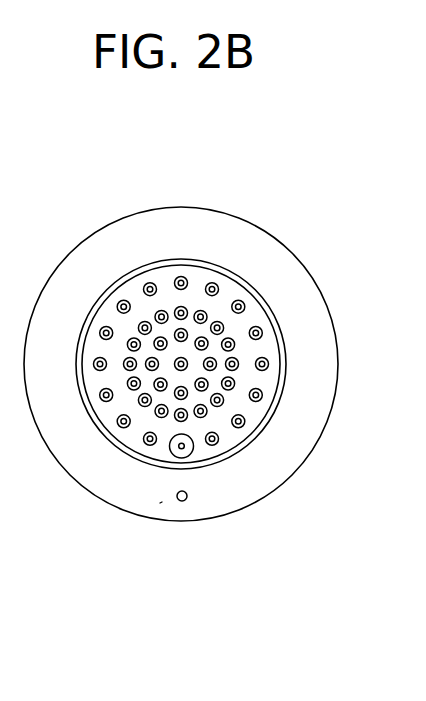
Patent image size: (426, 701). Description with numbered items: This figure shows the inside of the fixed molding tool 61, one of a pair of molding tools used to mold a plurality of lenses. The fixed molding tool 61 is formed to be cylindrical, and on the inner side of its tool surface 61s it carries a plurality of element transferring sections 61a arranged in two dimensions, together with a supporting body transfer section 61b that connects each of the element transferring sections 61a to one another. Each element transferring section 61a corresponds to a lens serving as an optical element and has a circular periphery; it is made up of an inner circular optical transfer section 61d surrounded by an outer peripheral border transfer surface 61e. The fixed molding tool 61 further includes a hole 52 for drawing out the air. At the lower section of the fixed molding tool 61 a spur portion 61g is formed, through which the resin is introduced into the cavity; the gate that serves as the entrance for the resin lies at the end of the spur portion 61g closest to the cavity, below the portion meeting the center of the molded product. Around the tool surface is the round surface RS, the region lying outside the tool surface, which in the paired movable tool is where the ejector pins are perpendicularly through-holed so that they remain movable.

The fixed molding tool 61 is at (323, 260).
The tool surface 61s is at (203, 260).
The element transferring sections 61a is at (245, 309).
The supporting body transfer section 61b is at (263, 383).
The outer peripheral border transfer surface 61e is at (262, 398).
The inner circular optical transfer section 61d is at (263, 403).
The spur portion 61g is at (173, 456).
The hole 52 is at (186, 501).
The round surface RS is at (162, 502).